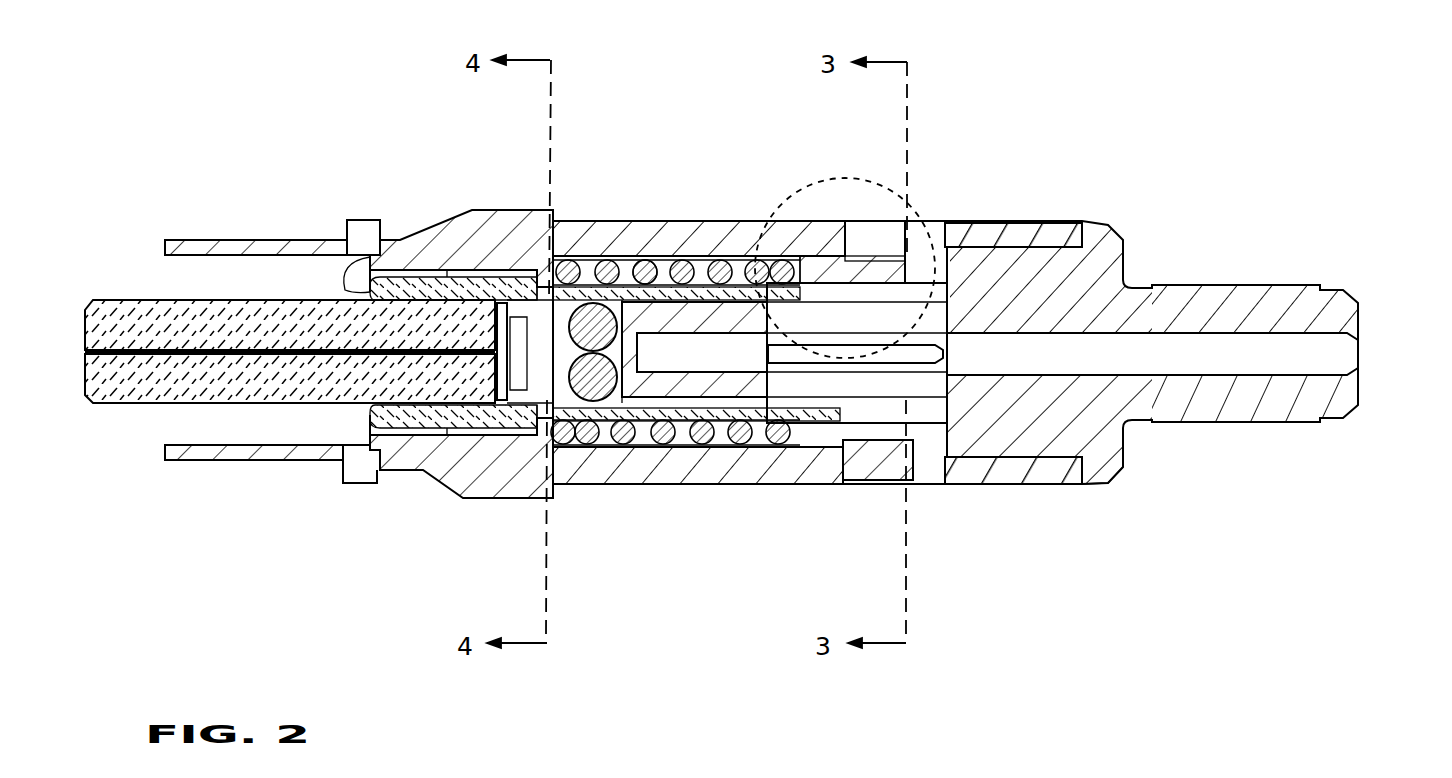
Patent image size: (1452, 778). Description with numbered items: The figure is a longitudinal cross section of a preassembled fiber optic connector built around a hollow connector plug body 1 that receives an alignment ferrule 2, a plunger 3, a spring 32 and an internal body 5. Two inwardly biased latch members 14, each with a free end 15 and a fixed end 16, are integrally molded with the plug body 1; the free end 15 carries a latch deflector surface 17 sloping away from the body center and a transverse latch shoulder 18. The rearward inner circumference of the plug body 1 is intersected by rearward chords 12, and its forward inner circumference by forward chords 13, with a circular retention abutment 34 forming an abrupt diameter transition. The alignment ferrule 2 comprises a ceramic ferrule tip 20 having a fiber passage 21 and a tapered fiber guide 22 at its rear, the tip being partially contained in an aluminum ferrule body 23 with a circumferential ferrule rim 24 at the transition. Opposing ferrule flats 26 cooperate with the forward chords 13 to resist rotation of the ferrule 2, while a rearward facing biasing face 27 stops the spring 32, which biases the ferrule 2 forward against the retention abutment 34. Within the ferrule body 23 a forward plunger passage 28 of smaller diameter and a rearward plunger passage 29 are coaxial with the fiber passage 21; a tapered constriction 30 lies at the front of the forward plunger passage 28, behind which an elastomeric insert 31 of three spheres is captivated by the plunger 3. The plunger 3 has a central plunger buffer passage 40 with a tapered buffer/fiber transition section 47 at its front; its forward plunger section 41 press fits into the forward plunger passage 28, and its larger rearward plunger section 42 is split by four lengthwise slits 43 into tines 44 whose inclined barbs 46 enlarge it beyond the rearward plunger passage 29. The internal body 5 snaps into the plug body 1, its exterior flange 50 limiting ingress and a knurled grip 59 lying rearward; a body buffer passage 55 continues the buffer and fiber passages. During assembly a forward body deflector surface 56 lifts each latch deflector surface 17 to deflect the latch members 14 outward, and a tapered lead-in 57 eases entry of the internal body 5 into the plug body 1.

The connector plug body 1 is at (227, 241).
The alignment ferrule 2 is at (121, 300).
The plunger 3 is at (655, 262).
The internal body 5 is at (778, 190).
The rearward chords 12 is at (567, 262).
The forward chords 13 is at (500, 278).
The latch members 14 is at (953, 222).
The free end 15 is at (860, 246).
The fixed end 16 is at (988, 220).
The latch deflector surface 17 is at (931, 272).
The transverse latch shoulder 18 is at (829, 262).
The ferrule tip 20 is at (120, 395).
The fiber passage 21 is at (88, 352).
The tapered fiber guide 22 is at (483, 338).
The ferrule body 23 is at (398, 415).
The ferrule rim 24 is at (365, 290).
The ferrule flats 26 is at (470, 280).
The biasing face 27 is at (602, 403).
The forward plunger passage 28 is at (528, 305).
The rearward plunger passage 29 is at (620, 393).
The tapered constriction 30 is at (505, 352).
The elastomeric insert 31 is at (598, 403).
The spring 32 is at (640, 265).
The retention abutment 34 is at (450, 255).
The plunger buffer passage 40 is at (688, 300).
The forward plunger section 41 is at (687, 398).
The rearward plunger section 42 is at (743, 385).
The lengthwise slits 43 is at (937, 352).
The tines 44 is at (867, 470).
The inclined barbs 46 is at (865, 487).
The buffer/fiber transition section 47 is at (640, 346).
The exterior flange 50 is at (1097, 477).
The body buffer passage 55 is at (1336, 351).
The forward body deflector surface 56 is at (810, 245).
The tapered lead-in 57 is at (713, 348).
The grip 59 is at (1222, 423).